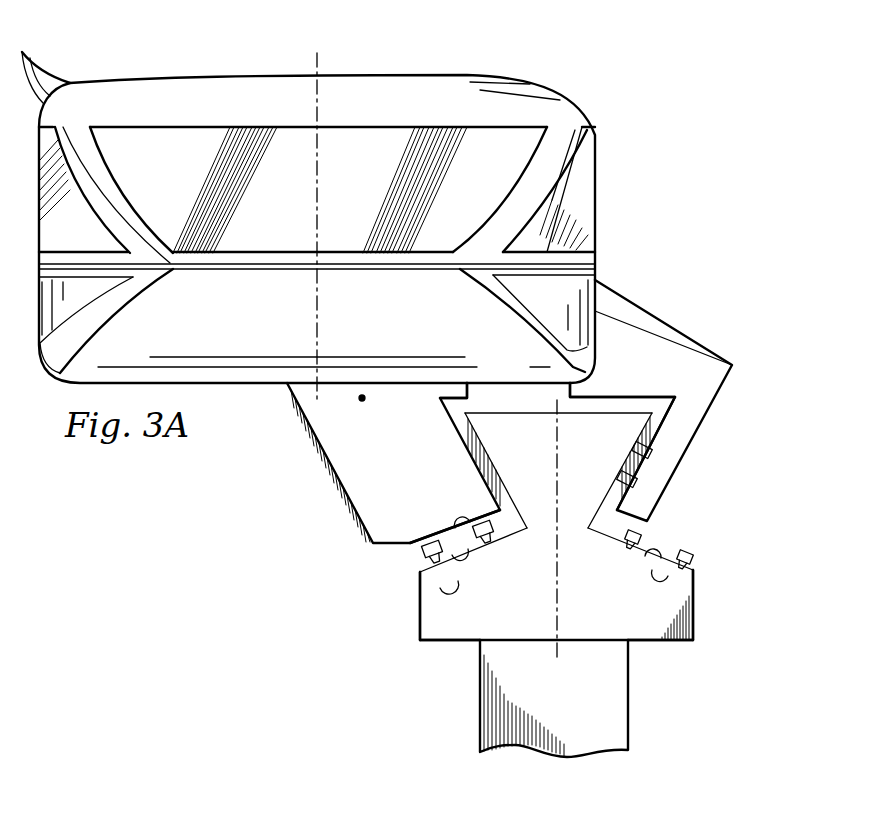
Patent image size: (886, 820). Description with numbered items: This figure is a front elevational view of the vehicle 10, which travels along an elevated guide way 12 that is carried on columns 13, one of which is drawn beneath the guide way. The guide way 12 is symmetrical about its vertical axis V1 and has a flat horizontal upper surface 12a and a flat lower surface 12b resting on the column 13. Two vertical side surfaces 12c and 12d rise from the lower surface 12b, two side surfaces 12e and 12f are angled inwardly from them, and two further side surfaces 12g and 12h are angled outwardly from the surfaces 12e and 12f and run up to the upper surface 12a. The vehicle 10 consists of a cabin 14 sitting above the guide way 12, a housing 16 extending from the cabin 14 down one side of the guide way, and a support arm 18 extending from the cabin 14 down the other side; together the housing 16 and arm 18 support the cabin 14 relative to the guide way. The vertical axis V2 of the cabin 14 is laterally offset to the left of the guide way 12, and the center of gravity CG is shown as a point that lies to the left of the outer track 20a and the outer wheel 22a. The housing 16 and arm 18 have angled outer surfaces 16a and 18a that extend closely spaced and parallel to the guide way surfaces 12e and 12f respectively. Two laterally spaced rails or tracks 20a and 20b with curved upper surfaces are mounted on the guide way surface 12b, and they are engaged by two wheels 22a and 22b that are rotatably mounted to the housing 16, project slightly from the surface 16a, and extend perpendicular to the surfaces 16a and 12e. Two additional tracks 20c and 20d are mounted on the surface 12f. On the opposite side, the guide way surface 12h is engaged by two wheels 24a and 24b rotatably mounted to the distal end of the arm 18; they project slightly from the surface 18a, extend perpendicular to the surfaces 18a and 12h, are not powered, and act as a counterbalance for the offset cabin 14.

The vehicle 10 is at (745, 206).
The guide way 12 is at (693, 612).
The upper surface 12a is at (518, 402).
The lower surface 12b is at (443, 645).
The vertical side surface 12c is at (420, 622).
The vertical side surface 12d is at (695, 633).
The angled side surface 12e is at (432, 565).
The angled side surface 12f is at (668, 560).
The angled side surface 12g is at (467, 438).
The angled side surface 12h is at (630, 462).
The column 13 is at (567, 705).
The cabin 14 is at (413, 74).
The housing 16 is at (330, 467).
The angled outer surface 16a is at (448, 533).
The support arm 18 is at (717, 393).
The angled outer surface 18a is at (660, 397).
The track 20a is at (440, 575).
The track 20b is at (487, 548).
The track 20c is at (645, 533).
The track 20d is at (692, 552).
The wheel 22a is at (422, 549).
The wheel 22b is at (480, 520).
The wheel 24a is at (637, 483).
The wheel 24b is at (652, 433).
The vertical axis of the guide way V1 is at (560, 585).
The vertical axis of the cabin V2 is at (318, 175).
The center of gravity CG is at (367, 399).